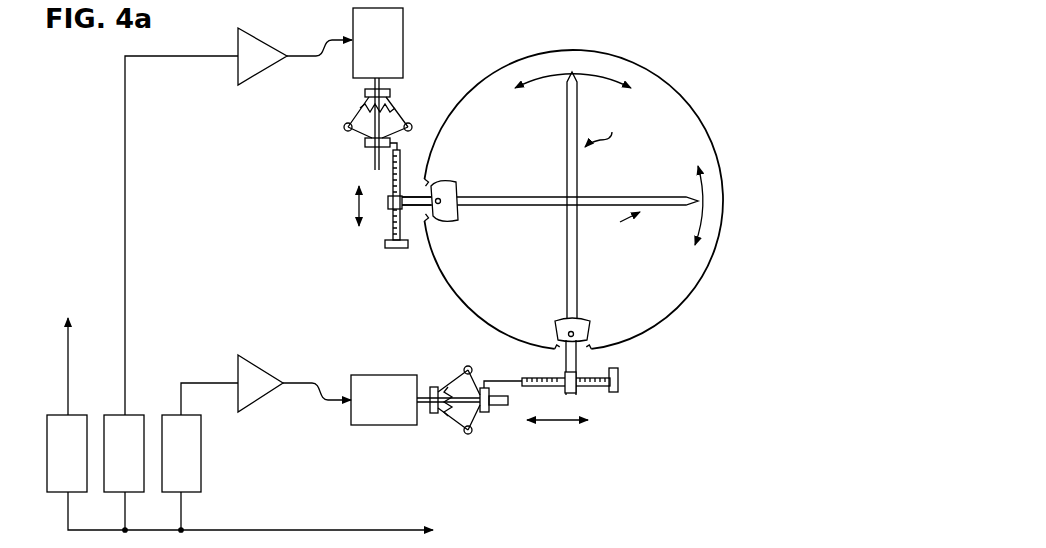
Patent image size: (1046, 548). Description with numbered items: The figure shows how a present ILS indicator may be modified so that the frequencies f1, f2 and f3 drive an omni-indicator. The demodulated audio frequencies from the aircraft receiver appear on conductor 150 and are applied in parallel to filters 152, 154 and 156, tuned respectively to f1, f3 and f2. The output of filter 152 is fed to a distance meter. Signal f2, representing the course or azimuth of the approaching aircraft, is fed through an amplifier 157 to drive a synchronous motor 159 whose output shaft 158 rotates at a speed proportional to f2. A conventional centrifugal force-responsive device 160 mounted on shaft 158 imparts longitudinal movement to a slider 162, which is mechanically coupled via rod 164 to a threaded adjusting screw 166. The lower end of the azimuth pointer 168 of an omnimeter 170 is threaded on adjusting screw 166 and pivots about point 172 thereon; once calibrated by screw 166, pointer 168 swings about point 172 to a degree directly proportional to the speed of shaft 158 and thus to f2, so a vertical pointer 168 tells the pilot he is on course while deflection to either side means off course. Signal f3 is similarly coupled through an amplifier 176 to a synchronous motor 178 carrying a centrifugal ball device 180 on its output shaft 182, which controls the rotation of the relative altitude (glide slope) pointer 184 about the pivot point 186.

The conductor 150 is at (300, 530).
The filter 152 is at (47, 478).
The filter 154 is at (104, 482).
The filter 156 is at (162, 482).
The amplifier 157 is at (254, 404).
The output shaft 158 is at (494, 408).
The synchronous motor 159 is at (380, 426).
The centrifugal force-responsive device 160 is at (462, 426).
The slider 162 is at (484, 414).
The rod 164 is at (487, 380).
The threaded adjusting screw 166 is at (588, 392).
The azimuth pointer 168 is at (578, 278).
The omnimeter 170 is at (676, 308).
The pivot point 172 is at (585, 334).
The amplifier 176 is at (257, 73).
The synchronous motor 178 is at (403, 48).
The centrifugal ball device 180 is at (392, 104).
The output shaft 182 is at (375, 160).
The glide slope pointer 184 is at (508, 205).
The pivot point 186 is at (436, 180).